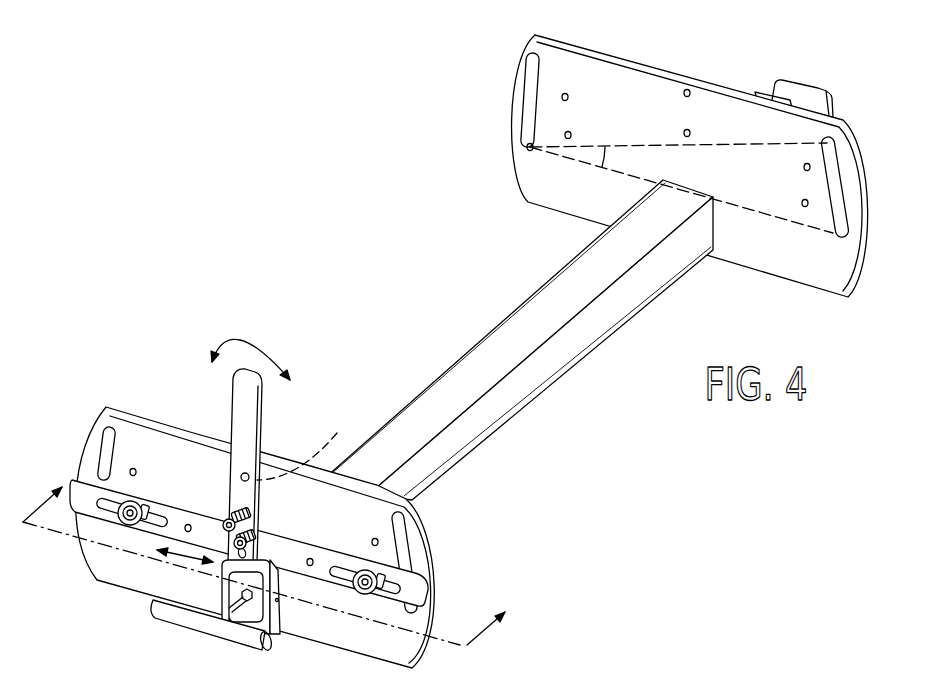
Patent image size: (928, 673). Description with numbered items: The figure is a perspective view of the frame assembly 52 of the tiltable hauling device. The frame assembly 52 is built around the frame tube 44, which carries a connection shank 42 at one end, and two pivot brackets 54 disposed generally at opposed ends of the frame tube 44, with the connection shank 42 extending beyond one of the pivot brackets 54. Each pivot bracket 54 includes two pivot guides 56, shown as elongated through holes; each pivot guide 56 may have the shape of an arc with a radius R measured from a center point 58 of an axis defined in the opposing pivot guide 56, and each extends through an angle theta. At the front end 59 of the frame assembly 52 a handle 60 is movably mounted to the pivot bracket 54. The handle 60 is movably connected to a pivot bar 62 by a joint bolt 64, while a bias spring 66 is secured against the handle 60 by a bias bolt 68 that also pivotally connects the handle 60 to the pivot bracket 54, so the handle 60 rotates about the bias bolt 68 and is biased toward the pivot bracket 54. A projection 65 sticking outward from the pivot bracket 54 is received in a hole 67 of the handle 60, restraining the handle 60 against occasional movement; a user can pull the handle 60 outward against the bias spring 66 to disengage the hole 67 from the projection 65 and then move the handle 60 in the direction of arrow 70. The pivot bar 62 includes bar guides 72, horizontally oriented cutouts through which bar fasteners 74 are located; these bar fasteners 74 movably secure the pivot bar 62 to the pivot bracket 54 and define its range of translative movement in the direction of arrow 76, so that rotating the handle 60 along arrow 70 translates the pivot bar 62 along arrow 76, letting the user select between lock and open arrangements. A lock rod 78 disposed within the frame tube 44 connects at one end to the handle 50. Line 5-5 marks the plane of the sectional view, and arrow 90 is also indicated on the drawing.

The section line 5- 5 is at (264, 552).
The connection shank 42 is at (790, 91).
The frame tube 44 is at (560, 353).
The handle 50 is at (187, 615).
The frame assembly 52 is at (275, 198).
The pivot bracket 54 is at (598, 72).
The pivot guide 56 is at (538, 84).
The center point 58 is at (529, 146).
The front end 59 is at (80, 398).
The handle 60 is at (253, 407).
The pivot bar 62 is at (287, 557).
The joint bolt 64 is at (250, 534).
The projection 65 is at (309, 442).
The bias spring 66 is at (236, 524).
The hole 67 is at (248, 476).
The bias bolt 68 is at (233, 514).
The arrow 70 is at (268, 343).
The bar guide 72 is at (160, 517).
The bar fastener 74 is at (134, 508).
The arrow 76 is at (185, 558).
The lock rod 78 is at (268, 612).
The view direction 90 is at (445, 586).
The radius R is at (790, 223).